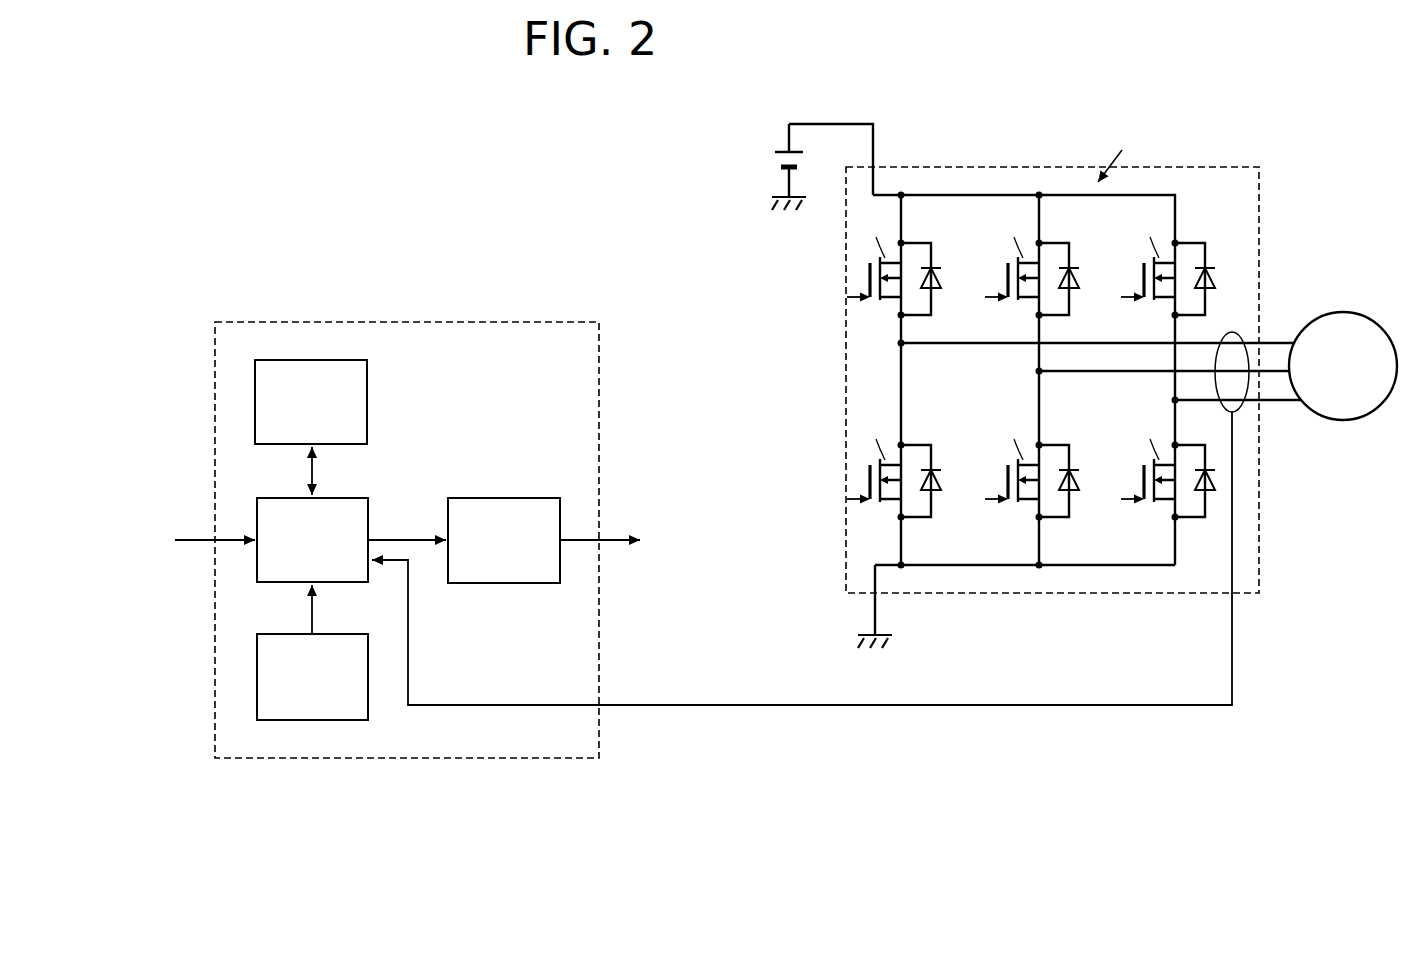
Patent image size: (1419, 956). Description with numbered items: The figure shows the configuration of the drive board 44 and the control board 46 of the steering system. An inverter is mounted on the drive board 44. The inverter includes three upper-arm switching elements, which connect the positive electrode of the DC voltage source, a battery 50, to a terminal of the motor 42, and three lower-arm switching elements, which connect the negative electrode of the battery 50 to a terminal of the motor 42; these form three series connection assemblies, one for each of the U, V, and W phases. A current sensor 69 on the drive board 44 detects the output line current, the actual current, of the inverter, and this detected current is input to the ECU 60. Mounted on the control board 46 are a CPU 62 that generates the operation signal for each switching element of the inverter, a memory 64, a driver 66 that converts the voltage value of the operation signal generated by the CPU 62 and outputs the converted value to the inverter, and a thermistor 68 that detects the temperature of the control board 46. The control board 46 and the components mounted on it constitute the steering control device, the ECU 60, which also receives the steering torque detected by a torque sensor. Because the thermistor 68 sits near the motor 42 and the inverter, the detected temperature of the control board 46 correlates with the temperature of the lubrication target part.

The motor 42 is at (1362, 313).
The drive board 44 is at (1260, 538).
The control board 46 is at (560, 318).
The battery 50 is at (782, 150).
The ECU 60 is at (557, 366).
The CPU 62 is at (343, 498).
The memory 64 is at (343, 360).
The driver 66 is at (535, 498).
The thermistor 68 is at (343, 634).
The current sensor 69 is at (1238, 332).